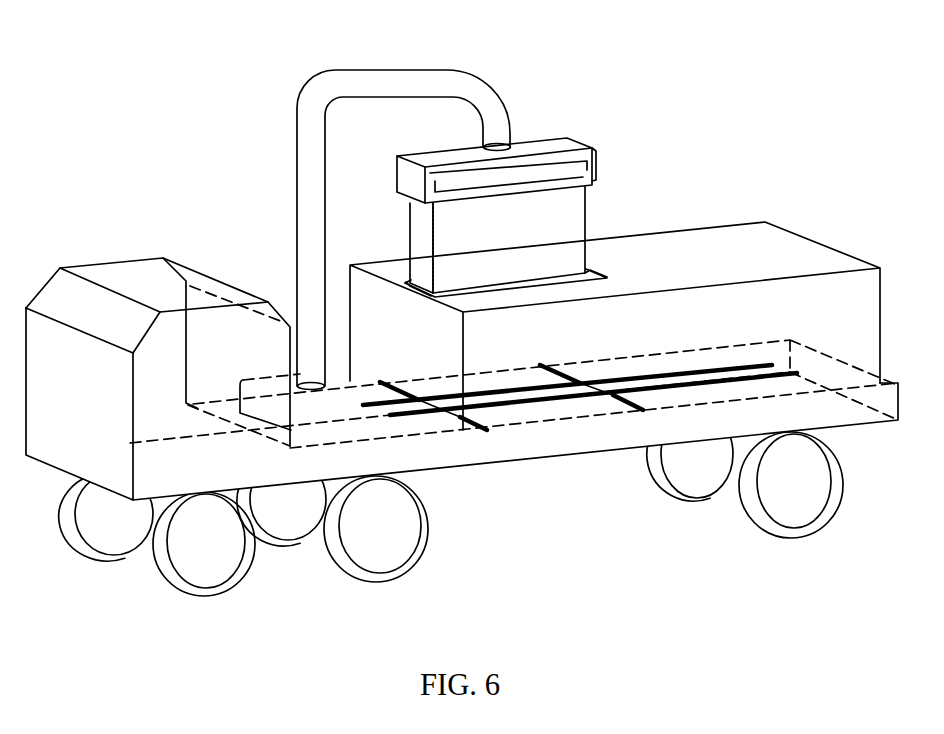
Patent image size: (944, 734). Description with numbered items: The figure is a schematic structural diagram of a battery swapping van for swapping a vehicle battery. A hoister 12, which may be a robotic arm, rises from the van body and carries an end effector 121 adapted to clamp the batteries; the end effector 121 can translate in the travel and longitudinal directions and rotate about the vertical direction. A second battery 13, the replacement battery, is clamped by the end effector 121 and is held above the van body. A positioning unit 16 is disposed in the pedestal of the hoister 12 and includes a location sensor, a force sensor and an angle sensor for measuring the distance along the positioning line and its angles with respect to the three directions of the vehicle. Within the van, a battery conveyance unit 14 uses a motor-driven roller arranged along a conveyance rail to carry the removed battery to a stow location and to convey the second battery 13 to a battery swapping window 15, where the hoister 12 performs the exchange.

The hoister 12 is at (342, 93).
The end effector 121 is at (543, 145).
The second battery 13 is at (577, 228).
The battery conveyance unit 14 is at (677, 388).
The battery swapping window 15 is at (492, 295).
The positioning unit 16 is at (340, 415).